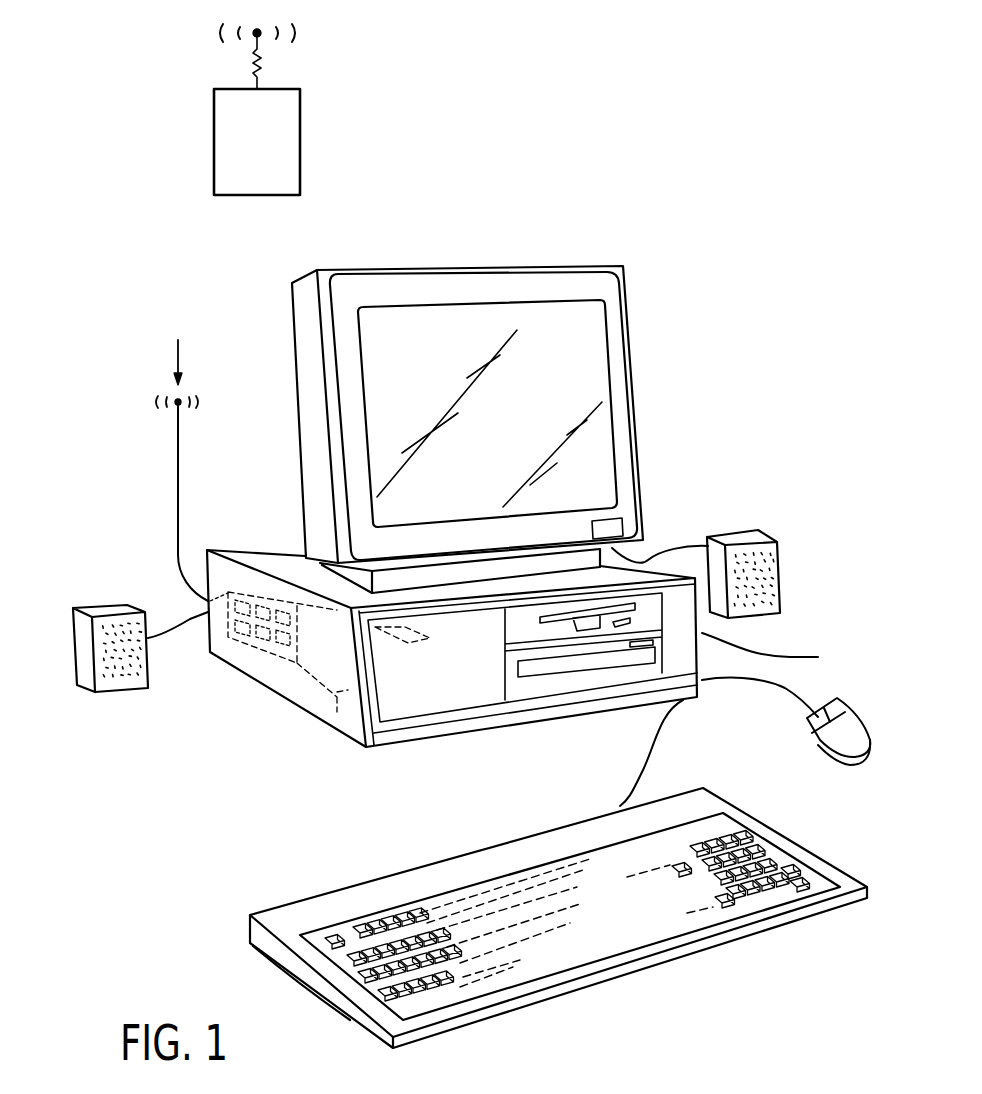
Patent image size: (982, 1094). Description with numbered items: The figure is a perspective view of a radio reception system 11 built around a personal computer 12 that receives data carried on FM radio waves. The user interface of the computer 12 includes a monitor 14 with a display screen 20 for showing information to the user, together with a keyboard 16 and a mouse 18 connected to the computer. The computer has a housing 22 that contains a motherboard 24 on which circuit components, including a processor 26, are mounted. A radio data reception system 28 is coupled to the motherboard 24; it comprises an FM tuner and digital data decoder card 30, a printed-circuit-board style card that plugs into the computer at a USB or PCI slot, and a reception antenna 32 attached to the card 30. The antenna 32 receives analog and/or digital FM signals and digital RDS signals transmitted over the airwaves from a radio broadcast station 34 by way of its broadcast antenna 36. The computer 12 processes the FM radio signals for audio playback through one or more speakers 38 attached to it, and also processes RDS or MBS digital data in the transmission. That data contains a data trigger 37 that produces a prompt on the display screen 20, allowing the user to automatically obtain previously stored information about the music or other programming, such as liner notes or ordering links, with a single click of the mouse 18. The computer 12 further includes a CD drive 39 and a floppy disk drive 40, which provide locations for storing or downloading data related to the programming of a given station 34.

The radio reception system 11 is at (694, 131).
The personal computer 12 is at (674, 289).
The monitor 14 is at (640, 451).
The keyboard 16 is at (782, 842).
The mouse 18 is at (857, 727).
The display screen 20 is at (600, 422).
The housing 22 is at (776, 652).
The motherboard 24 is at (337, 708).
The processor 26 is at (408, 646).
The radio data reception system 28 is at (260, 643).
The FM tuner and digital data decoder card 30 is at (228, 631).
The reception antenna 32 is at (180, 438).
The radio broadcast station 34 is at (317, 136).
The broadcast antenna 36 is at (259, 78).
The data trigger 37 is at (182, 355).
The speakers 38 is at (76, 645).
The CD drive 39 is at (543, 674).
The floppy disk drive 40 is at (610, 617).